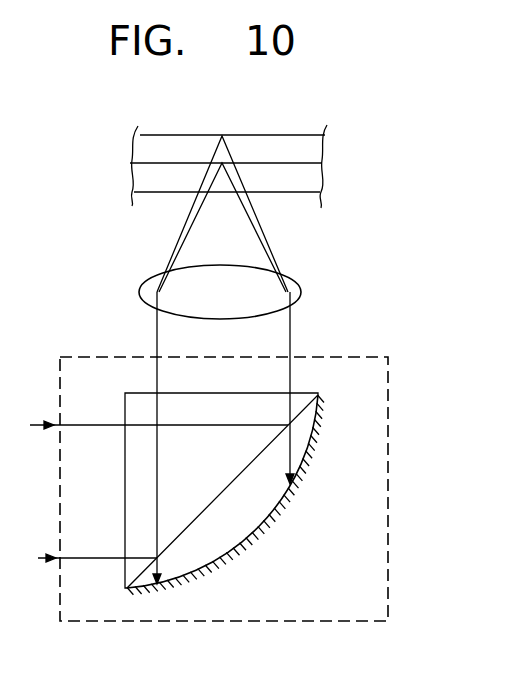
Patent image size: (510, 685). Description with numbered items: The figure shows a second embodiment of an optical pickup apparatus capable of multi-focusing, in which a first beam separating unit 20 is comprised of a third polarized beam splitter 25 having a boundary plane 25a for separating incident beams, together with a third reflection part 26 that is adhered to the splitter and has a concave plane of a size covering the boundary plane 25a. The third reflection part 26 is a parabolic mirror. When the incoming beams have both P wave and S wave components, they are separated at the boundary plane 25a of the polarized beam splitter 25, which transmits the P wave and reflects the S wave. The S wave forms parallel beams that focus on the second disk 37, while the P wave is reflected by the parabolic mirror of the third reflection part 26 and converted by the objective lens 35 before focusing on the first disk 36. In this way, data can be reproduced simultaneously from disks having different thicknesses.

The second disk 37 is at (140, 133).
The first disk 36 is at (312, 190).
The objective lens 35 is at (302, 289).
The first beam separating unit 20 is at (378, 357).
The third polarized beam splitter 25 is at (308, 393).
The boundary plane 25a is at (316, 426).
The third reflection part 26 is at (286, 512).